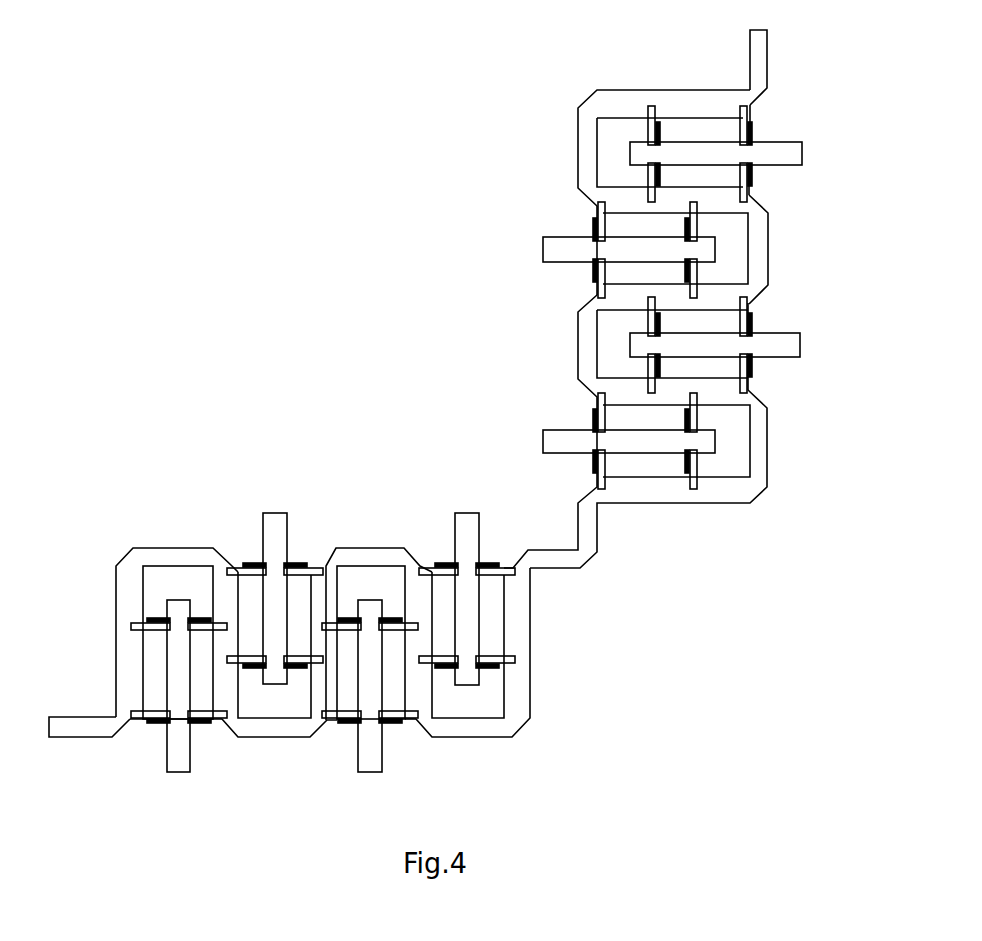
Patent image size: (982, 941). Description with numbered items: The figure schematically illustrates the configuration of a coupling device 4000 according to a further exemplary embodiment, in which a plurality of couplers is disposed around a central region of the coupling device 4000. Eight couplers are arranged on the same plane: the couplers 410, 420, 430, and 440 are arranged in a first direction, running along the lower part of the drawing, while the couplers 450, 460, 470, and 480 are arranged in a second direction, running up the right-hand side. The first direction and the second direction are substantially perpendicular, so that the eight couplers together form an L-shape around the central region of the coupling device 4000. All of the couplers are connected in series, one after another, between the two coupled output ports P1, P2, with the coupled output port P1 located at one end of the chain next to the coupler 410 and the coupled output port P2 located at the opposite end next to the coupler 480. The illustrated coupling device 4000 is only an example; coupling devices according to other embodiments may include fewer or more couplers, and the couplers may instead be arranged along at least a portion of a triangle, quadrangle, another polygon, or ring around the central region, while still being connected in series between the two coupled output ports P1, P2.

The coupling device 4000 is at (146, 103).
The coupler 410 is at (117, 508).
The coupler 420 is at (213, 497).
The coupler 430 is at (310, 508).
The coupler 440 is at (405, 497).
The coupler 450 is at (777, 378).
The coupler 460 is at (538, 288).
The coupler 470 is at (525, 187).
The coupler 480 is at (538, 90).
The coupled output port P1 is at (63, 739).
The coupled output port P2 is at (759, 40).